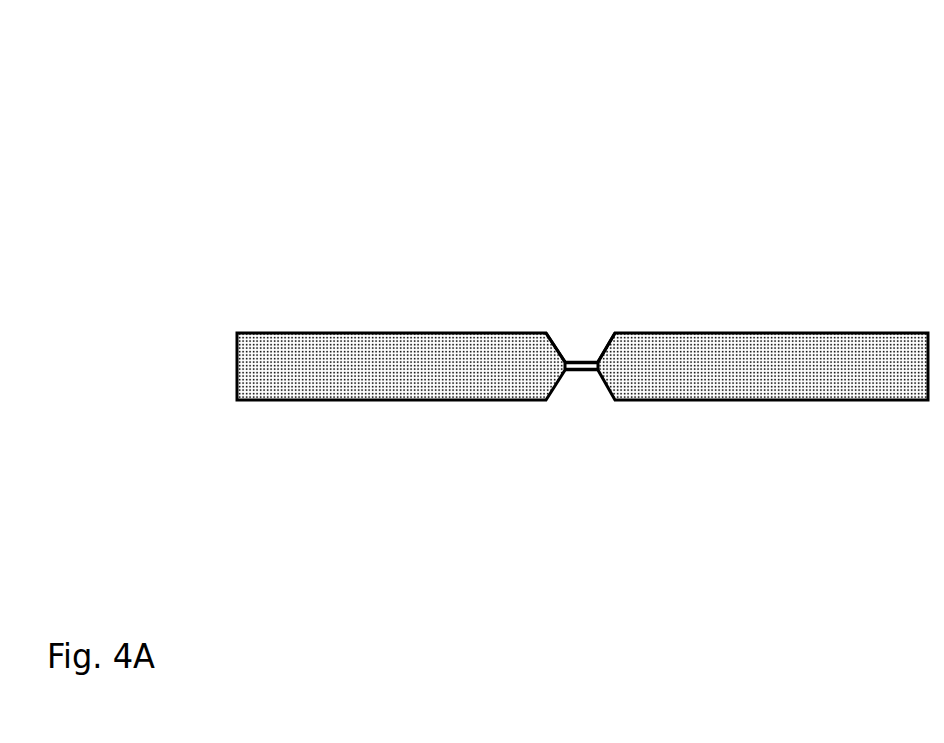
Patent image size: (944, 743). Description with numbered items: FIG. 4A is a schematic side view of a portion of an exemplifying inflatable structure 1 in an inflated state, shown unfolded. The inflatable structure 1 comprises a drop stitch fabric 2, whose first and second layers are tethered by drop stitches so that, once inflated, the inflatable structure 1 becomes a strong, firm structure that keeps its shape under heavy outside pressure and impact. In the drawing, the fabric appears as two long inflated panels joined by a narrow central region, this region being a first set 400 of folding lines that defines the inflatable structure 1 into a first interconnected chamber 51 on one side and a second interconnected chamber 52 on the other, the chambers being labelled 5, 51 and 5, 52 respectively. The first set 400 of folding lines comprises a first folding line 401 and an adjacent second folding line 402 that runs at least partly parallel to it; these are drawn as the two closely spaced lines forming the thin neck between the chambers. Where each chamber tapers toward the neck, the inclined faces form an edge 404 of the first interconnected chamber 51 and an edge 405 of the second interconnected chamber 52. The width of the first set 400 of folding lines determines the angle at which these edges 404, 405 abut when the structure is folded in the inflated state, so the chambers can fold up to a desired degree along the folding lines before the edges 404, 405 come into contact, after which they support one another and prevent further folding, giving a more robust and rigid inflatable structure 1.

The inflatable structure 1 is at (210, 106).
The drop stitch fabric 2 is at (275, 486).
The inflatable chamber 5 is at (582, 323).
The first interconnected chamber 51 is at (381, 307).
The second interconnected chamber 52 is at (761, 308).
The first set of folding lines 400 is at (600, 404).
The first folding line 401 is at (571, 345).
The second adjacent folding line 402 is at (594, 345).
The edge of the first interconnected chamber 404 is at (542, 319).
The edge of the second interconnected chamber 405 is at (624, 321).